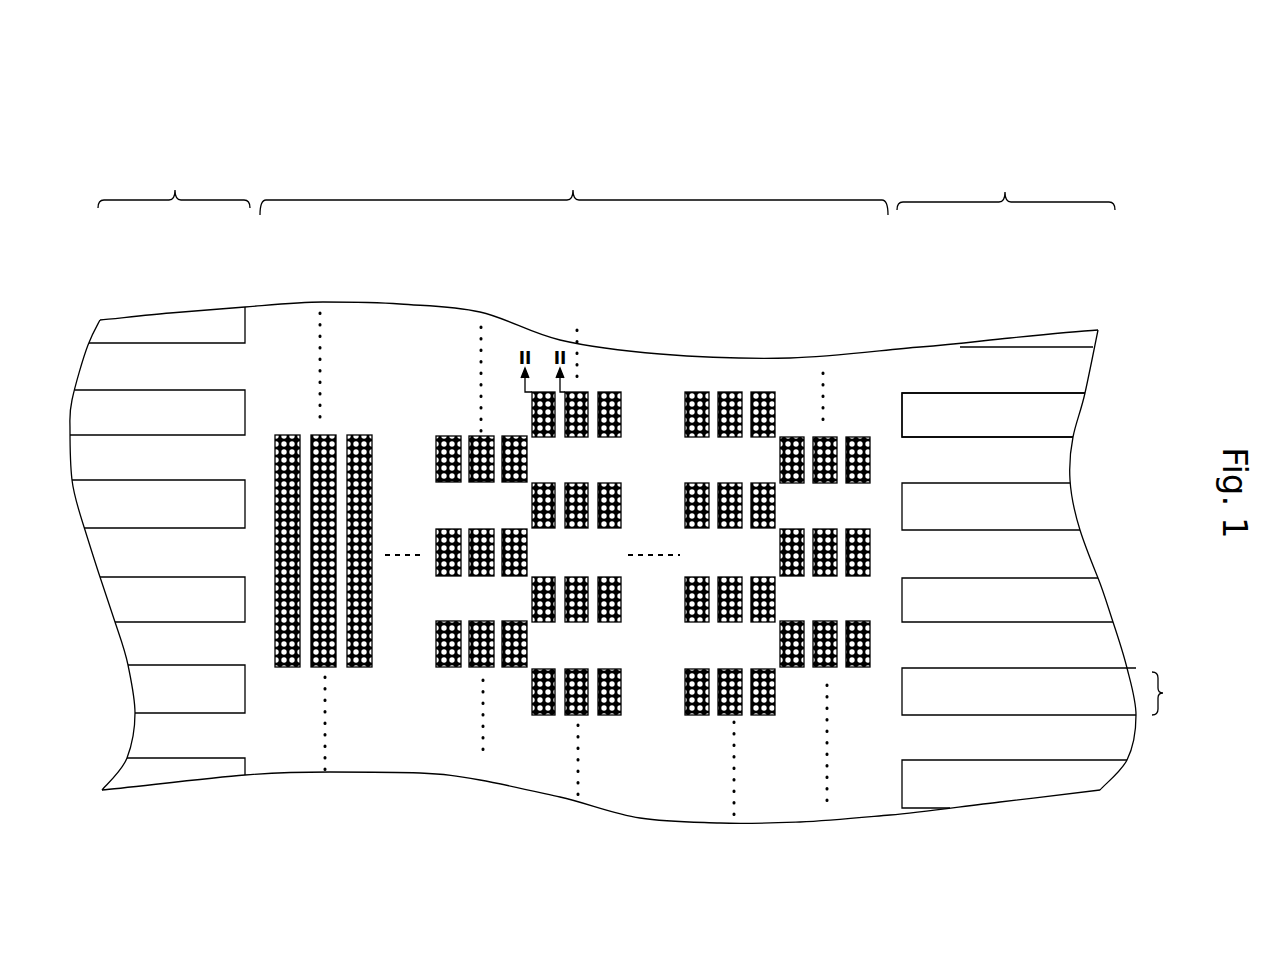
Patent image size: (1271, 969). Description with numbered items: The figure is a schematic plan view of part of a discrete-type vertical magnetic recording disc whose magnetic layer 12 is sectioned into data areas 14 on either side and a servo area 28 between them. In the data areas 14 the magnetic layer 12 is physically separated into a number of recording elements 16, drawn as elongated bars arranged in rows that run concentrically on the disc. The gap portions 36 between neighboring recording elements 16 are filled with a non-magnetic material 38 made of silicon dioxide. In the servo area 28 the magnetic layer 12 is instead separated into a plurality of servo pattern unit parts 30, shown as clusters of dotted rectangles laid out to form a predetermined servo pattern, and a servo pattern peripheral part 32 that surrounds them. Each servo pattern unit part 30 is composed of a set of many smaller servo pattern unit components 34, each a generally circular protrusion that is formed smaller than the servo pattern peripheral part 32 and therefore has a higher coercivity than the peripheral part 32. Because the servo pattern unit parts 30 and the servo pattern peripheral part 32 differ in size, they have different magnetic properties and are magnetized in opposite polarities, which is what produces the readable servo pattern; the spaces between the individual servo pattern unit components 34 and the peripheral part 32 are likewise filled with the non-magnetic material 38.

The magnetic layer 12 is at (716, 126).
The data areas 14 is at (598, 484).
The servo areas 28 is at (574, 183).
The recording elements 16 is at (997, 370).
The servo pattern unit parts 30 is at (366, 430).
The servo pattern peripheral part 32 is at (348, 322).
The servo pattern unit components 34 is at (700, 392).
The gap portions 36 is at (1046, 691).
The non-magnetic material 38 is at (1060, 412).